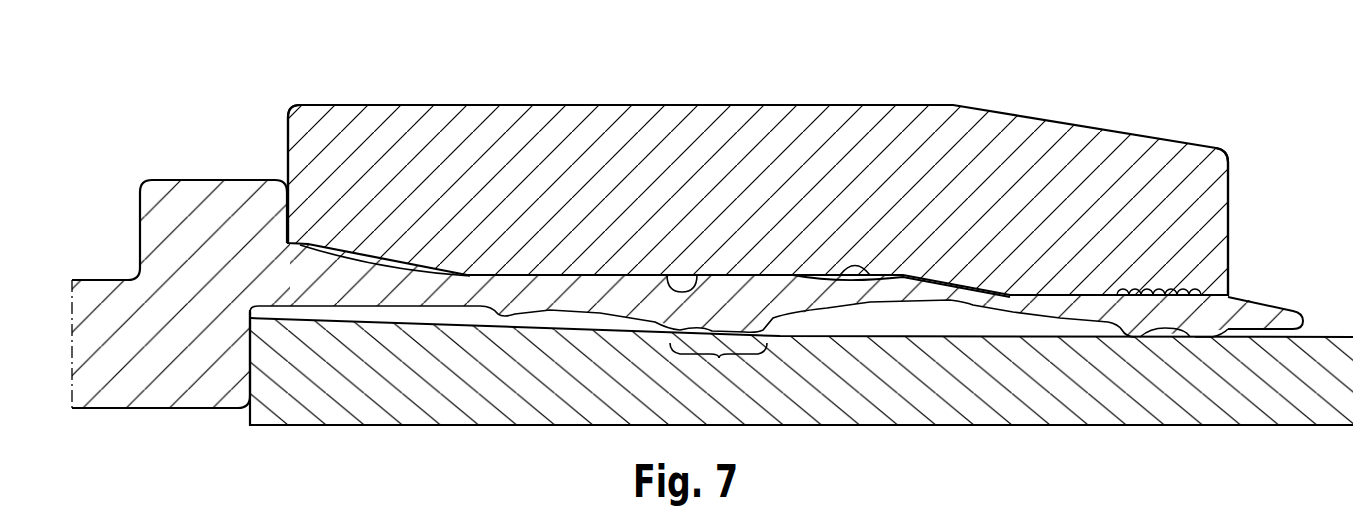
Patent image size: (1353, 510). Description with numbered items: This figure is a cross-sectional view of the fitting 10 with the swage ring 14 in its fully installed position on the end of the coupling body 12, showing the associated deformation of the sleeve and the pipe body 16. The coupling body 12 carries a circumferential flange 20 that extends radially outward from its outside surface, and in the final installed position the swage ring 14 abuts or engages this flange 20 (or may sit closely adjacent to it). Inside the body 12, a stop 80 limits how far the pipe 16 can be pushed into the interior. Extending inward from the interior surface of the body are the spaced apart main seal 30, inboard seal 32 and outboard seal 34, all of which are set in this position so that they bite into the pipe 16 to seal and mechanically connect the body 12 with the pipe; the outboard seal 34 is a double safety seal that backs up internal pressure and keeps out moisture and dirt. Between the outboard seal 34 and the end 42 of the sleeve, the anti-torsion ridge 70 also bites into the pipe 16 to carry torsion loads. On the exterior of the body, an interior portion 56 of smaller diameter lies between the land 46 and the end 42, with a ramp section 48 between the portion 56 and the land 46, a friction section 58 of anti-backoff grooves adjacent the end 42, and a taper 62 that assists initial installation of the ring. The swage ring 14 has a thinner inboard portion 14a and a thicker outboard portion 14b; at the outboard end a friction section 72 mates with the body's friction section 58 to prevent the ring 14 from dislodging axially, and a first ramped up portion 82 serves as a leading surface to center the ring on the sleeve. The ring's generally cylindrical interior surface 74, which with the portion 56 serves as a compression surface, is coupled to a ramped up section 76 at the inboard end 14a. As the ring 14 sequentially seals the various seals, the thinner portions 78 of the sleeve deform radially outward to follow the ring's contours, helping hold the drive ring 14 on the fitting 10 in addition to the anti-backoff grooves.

The fitting 10 is at (828, 92).
The coupling body 12 is at (357, 278).
The swage ring 14 is at (910, 147).
The inboard portion 14a is at (288, 138).
The outboard portion 14b is at (1230, 183).
The pipe body 16 is at (1256, 387).
The flange 20 is at (212, 213).
The main seal 30 is at (719, 358).
The inboard seal 32 is at (512, 320).
The outboard seal 34 is at (1138, 337).
The end 42 is at (1260, 295).
The land 46 is at (697, 282).
The ramp section 48 is at (868, 276).
The interior portion 56 is at (976, 294).
The friction section 58 is at (1167, 330).
The taper 62 is at (1277, 308).
The anti-torsion ridge 70 is at (1207, 340).
The friction section 72 is at (1182, 290).
The interior surface 74 is at (746, 276).
The ramped up section 76 is at (365, 253).
The thinner portion 78 is at (955, 300).
The stop 80 is at (252, 357).
The first ramped up portion 82 is at (1000, 290).